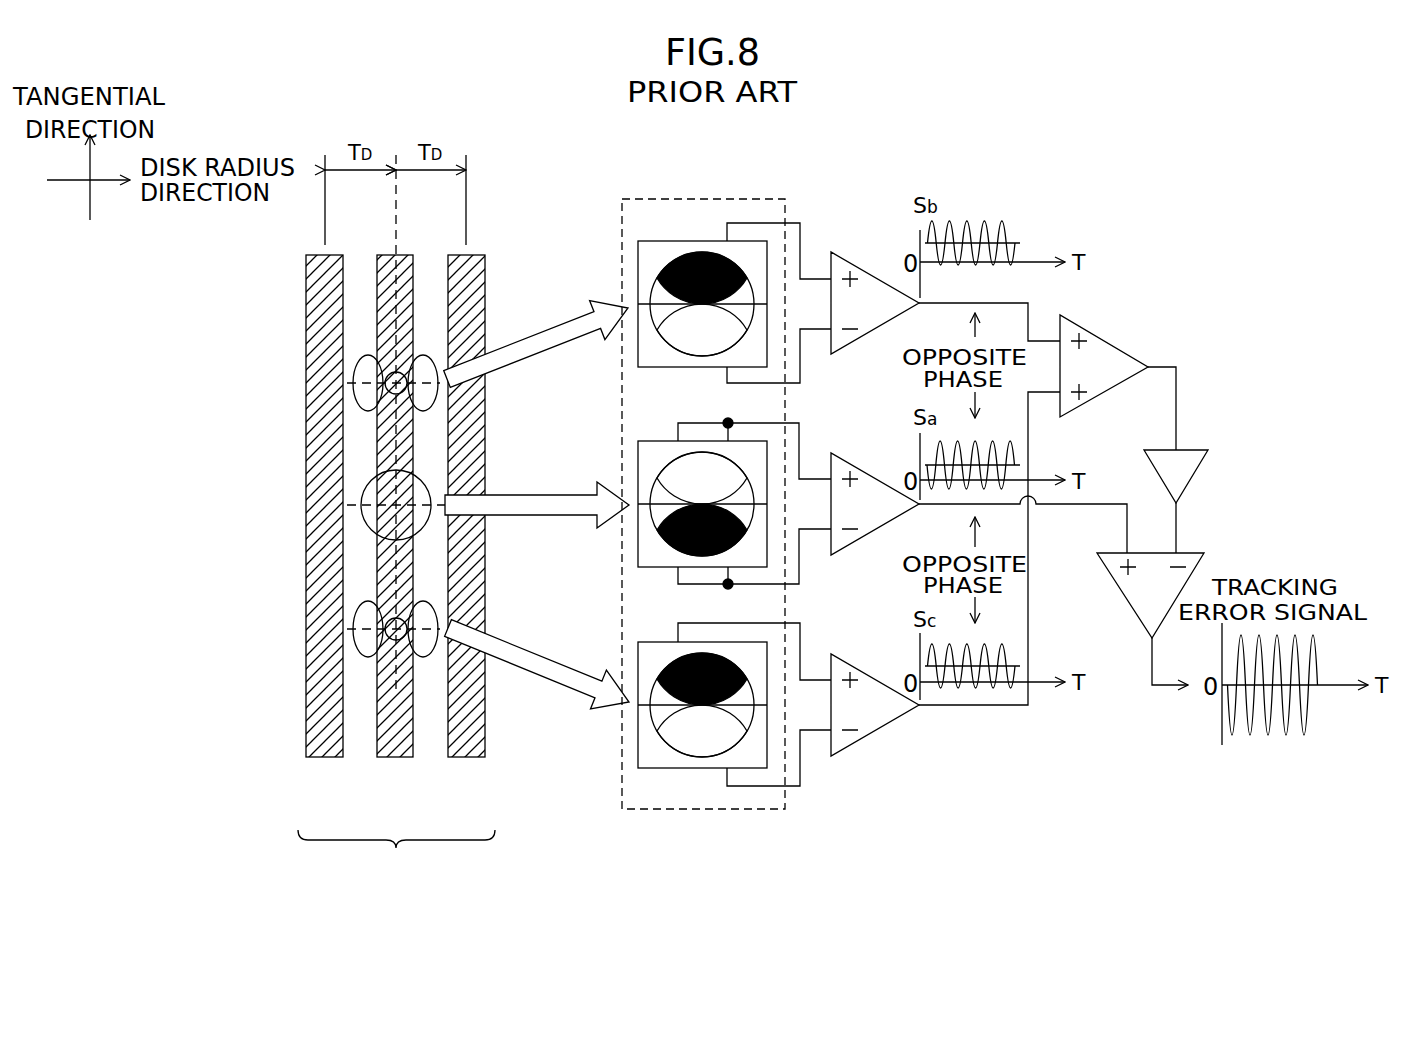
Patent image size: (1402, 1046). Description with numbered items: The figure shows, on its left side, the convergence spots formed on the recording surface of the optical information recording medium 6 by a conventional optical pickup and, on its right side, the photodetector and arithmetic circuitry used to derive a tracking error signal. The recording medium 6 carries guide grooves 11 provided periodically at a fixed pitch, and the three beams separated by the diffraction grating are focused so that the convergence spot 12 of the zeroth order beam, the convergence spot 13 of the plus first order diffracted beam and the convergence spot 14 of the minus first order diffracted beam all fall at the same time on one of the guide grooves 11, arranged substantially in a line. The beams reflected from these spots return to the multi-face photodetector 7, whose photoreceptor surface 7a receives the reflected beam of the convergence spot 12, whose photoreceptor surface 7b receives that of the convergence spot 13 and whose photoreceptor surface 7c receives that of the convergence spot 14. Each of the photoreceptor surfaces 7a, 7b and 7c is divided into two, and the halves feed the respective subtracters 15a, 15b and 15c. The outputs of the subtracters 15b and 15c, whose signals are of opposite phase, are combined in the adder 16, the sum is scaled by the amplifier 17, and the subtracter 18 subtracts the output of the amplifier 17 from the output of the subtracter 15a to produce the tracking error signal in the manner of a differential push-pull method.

The optical information recording medium 6 is at (396, 859).
The multi-face photodetector 7 is at (700, 810).
The photoreceptor surface 7a is at (638, 460).
The photoreceptor surface 7b is at (638, 268).
The photoreceptor surface 7c is at (638, 655).
The guide groove 11 is at (324, 757).
The convergence spot 12 is at (362, 521).
The convergence spot 13 is at (352, 398).
The convergence spot 14 is at (356, 649).
The subtracter 15a is at (882, 478).
The subtracter 15b is at (882, 278).
The subtracter 15c is at (882, 680).
The adder 16 is at (1123, 347).
The amplifier 17 is at (1207, 450).
The subtracter 18 is at (1193, 553).